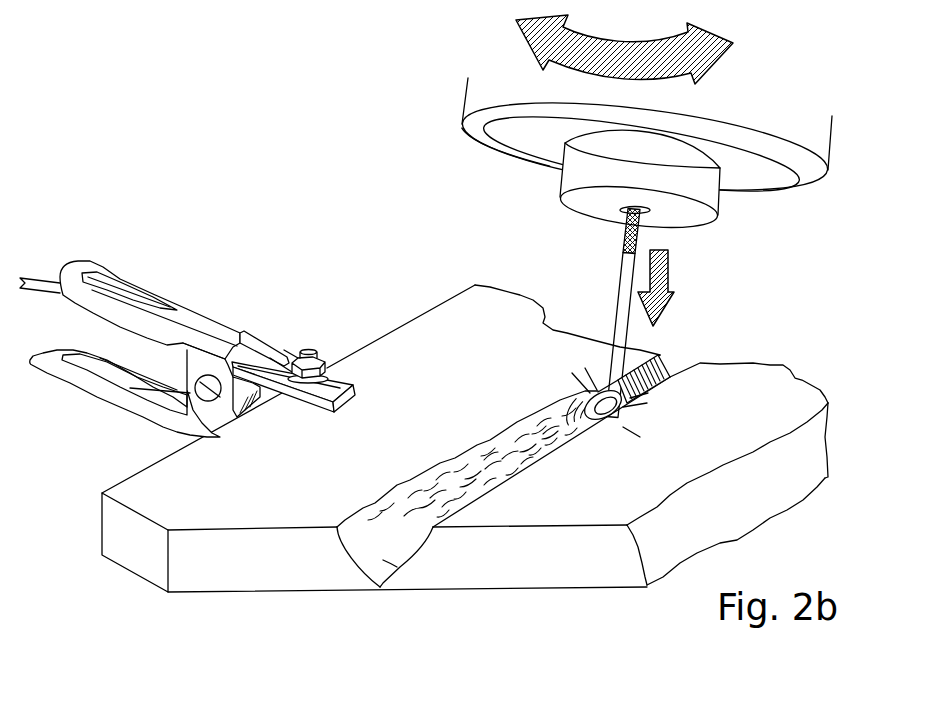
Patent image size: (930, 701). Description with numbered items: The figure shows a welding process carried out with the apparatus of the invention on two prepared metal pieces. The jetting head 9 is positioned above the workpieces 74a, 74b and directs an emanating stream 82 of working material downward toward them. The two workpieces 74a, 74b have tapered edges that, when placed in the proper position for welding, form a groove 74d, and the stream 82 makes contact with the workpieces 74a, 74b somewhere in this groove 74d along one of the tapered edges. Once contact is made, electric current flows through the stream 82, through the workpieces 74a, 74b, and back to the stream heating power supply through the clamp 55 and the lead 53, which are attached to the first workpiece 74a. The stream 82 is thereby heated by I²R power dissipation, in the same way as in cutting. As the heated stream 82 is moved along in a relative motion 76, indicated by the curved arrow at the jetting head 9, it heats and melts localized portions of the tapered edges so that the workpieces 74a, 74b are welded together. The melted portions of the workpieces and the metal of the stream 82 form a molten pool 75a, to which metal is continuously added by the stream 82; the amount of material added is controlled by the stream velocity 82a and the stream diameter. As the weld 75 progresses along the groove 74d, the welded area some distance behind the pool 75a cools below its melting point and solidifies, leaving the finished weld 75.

The jetting head 9 is at (718, 121).
The relative motion 76 is at (527, 39).
The stream 82 is at (622, 280).
The stream velocity 82a is at (672, 272).
The workpiece 74a is at (232, 568).
The workpiece 74b is at (558, 565).
The groove 74d is at (673, 368).
The weld 75 is at (385, 560).
The molten pool 75a is at (623, 417).
The lead 53 is at (43, 271).
The clamp 55 is at (340, 380).